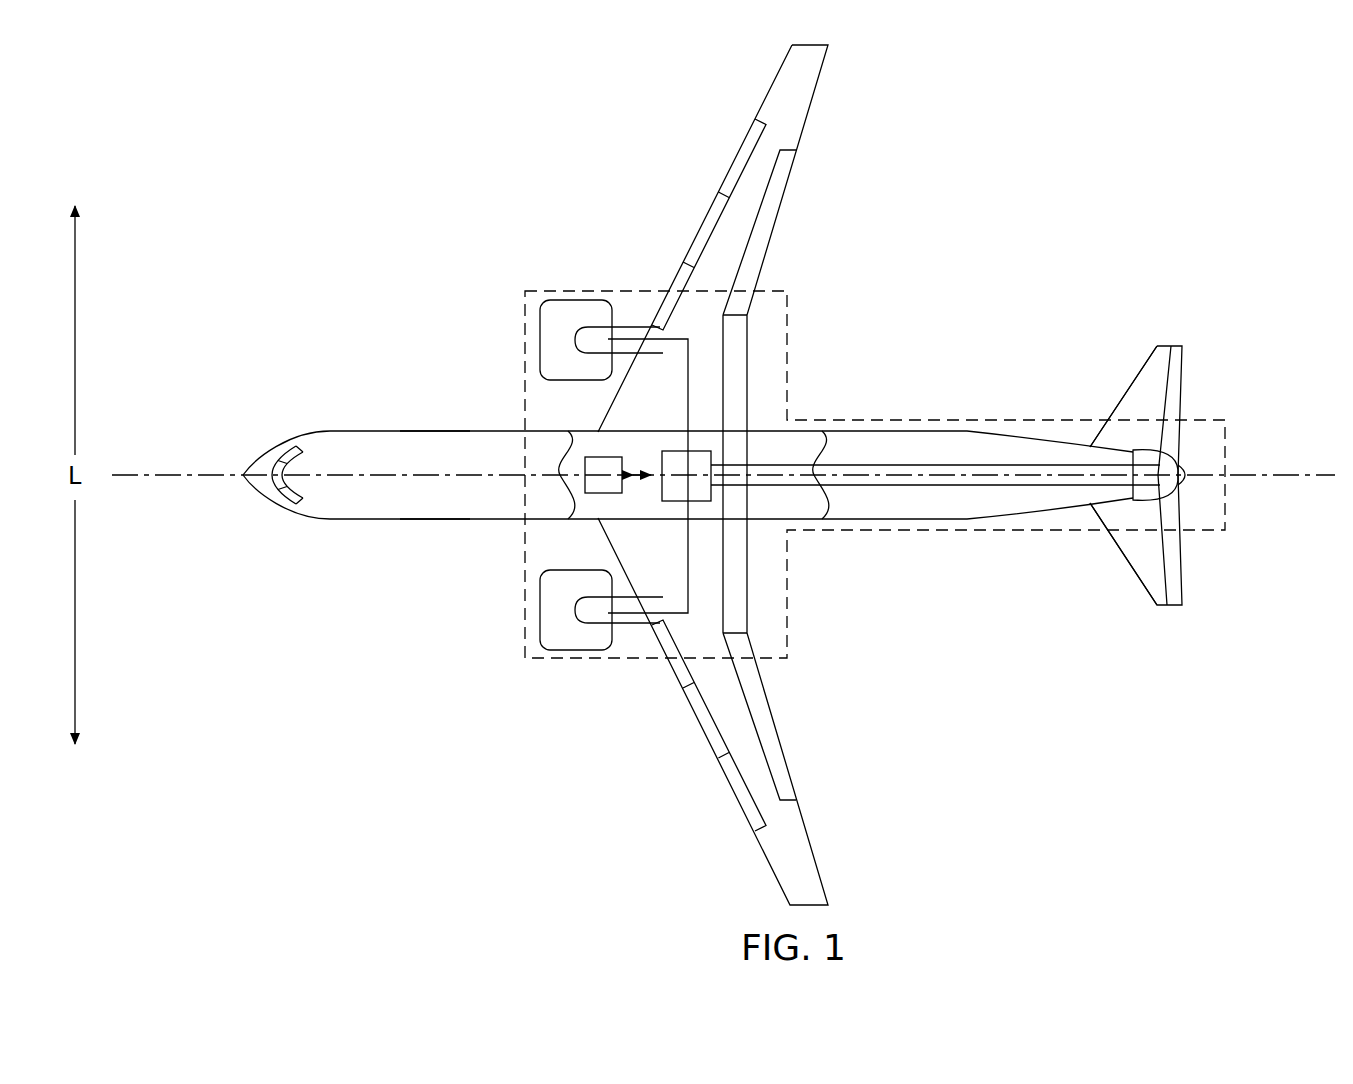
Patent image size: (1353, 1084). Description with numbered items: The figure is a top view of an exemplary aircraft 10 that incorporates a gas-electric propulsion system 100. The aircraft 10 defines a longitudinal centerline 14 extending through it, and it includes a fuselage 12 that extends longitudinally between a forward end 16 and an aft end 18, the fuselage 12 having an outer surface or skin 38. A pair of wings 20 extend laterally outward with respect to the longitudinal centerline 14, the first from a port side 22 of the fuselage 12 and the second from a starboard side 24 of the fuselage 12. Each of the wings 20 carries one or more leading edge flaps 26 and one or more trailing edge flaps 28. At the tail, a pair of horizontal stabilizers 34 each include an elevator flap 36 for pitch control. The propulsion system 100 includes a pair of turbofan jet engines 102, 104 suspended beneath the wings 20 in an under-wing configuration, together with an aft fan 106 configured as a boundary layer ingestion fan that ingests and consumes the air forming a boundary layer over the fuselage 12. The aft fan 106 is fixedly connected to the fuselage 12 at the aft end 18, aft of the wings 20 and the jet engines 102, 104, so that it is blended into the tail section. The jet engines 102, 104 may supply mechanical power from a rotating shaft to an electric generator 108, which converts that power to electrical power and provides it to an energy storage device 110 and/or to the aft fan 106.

The aircraft 10 is at (968, 160).
The fuselage 12 is at (322, 497).
The longitudinal centerline 14 is at (178, 485).
The forward end 16 is at (241, 493).
The aft end 18 is at (1158, 516).
The wings 20 is at (735, 475).
The port side 22 is at (434, 527).
The starboard side 24 is at (431, 426).
The leading edge flaps 26 is at (704, 738).
The trailing edge flaps 28 is at (783, 735).
The horizontal stabilizers 34 is at (1138, 378).
The elevator flap 36 is at (1172, 378).
The outer surface or skin 38 is at (921, 495).
The propulsion system 100 is at (840, 480).
The turbofan jet engine 102 is at (564, 636).
The turbofan jet engine 104 is at (560, 310).
The aft fan 106 is at (1178, 440).
The electric generator 108 is at (712, 457).
The energy storage device 110 is at (598, 500).